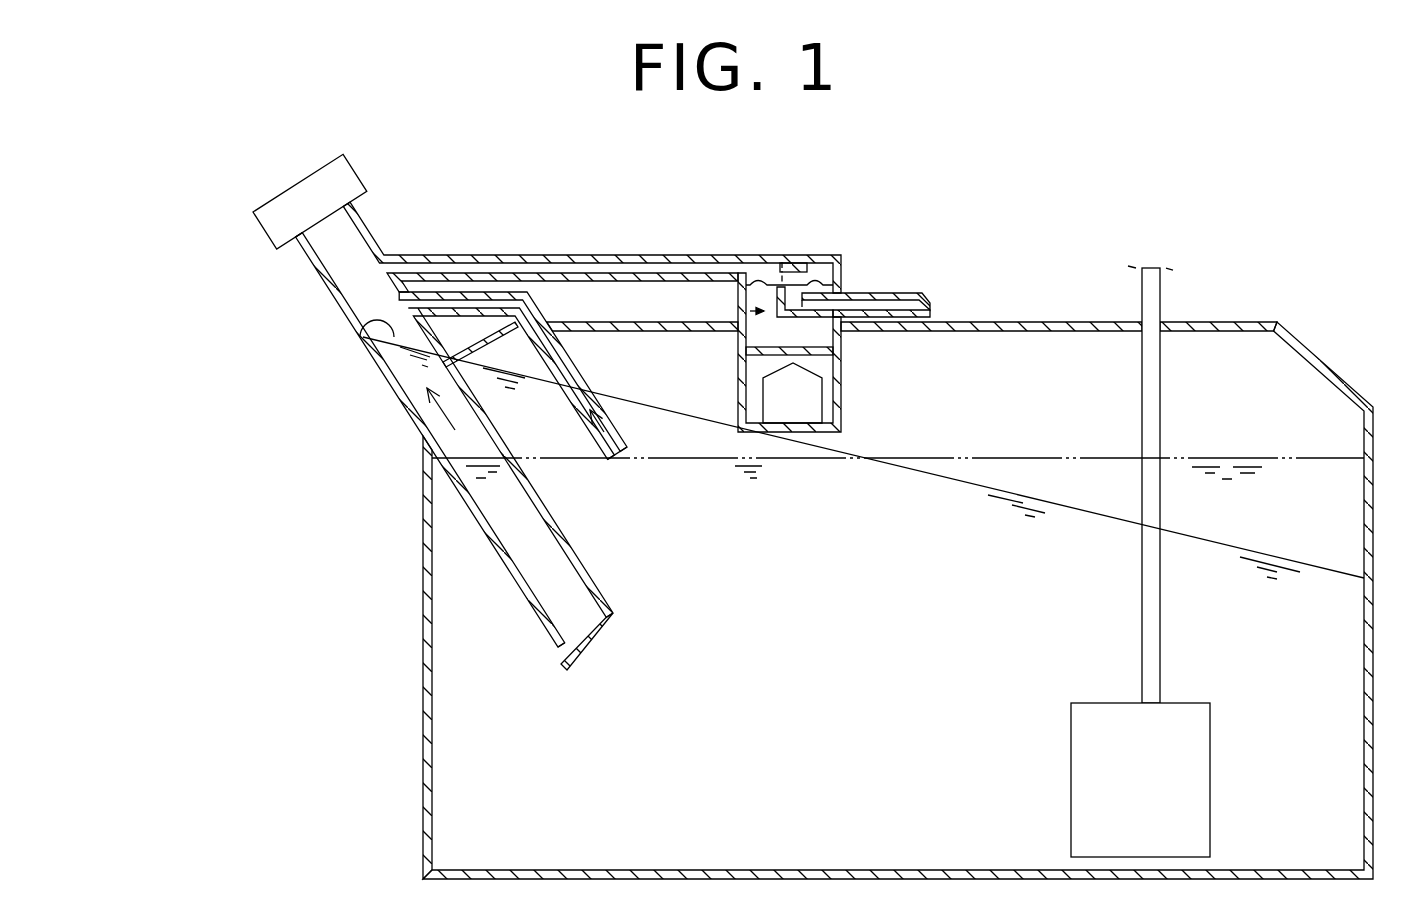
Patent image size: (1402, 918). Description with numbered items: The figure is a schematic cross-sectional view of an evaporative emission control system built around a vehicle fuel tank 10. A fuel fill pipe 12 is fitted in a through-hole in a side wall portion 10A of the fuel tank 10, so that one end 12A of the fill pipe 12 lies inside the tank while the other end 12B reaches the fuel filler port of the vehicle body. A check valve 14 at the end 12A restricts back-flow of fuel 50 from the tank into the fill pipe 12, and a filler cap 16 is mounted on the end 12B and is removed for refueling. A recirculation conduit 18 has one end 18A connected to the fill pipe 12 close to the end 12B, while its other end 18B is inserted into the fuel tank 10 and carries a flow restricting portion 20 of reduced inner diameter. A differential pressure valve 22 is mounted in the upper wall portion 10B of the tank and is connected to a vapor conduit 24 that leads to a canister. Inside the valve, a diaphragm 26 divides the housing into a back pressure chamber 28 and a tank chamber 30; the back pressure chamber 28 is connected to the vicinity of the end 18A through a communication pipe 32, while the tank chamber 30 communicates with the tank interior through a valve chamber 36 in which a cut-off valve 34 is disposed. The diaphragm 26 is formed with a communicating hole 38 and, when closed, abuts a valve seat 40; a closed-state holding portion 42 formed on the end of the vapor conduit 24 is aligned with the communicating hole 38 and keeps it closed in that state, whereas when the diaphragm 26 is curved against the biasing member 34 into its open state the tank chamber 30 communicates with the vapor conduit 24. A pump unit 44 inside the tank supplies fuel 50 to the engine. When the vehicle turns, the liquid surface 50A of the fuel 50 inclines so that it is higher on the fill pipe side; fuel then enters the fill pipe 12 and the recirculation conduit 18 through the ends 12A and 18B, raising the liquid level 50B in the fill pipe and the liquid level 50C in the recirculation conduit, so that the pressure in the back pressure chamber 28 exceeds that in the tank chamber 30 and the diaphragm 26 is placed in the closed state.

The fuel tank 10 is at (1049, 314).
The side wall portion 10A is at (423, 620).
The upper wall portion 10B is at (990, 322).
The fuel fill pipe 12 is at (372, 378).
The one end of the fill pipe 12A is at (560, 650).
The other end of the fuel fill pipe 12B is at (298, 238).
The check valve 14 is at (596, 648).
The filler cap 16 is at (312, 178).
The recirculation conduit 18 is at (548, 298).
The one end of the recirculation conduit 18A is at (417, 287).
The other end of the recirculation conduit 18B is at (630, 447).
The flow restricting portion 20 is at (626, 460).
The differential pressure valve 22 is at (847, 248).
The vapor conduit 24 is at (889, 294).
The diaphragm 26 is at (757, 283).
The back pressure chamber 28 is at (770, 252).
The tank chamber 30 is at (620, 315).
The communication pipe 32 is at (669, 253).
The biasing member 34 is at (780, 393).
The valve chamber 36 is at (826, 370).
The communicating hole 38 is at (783, 262).
The valve seat 40 is at (782, 290).
The closed-state holding portion 42 is at (750, 311).
The pump unit 44 is at (1210, 782).
The fuel 50 is at (1059, 492).
The liquid surface 50A is at (961, 478).
The liquid level in the fuel fill pipe 50B is at (362, 337).
The liquid level in the recirculation conduit 50C is at (575, 378).